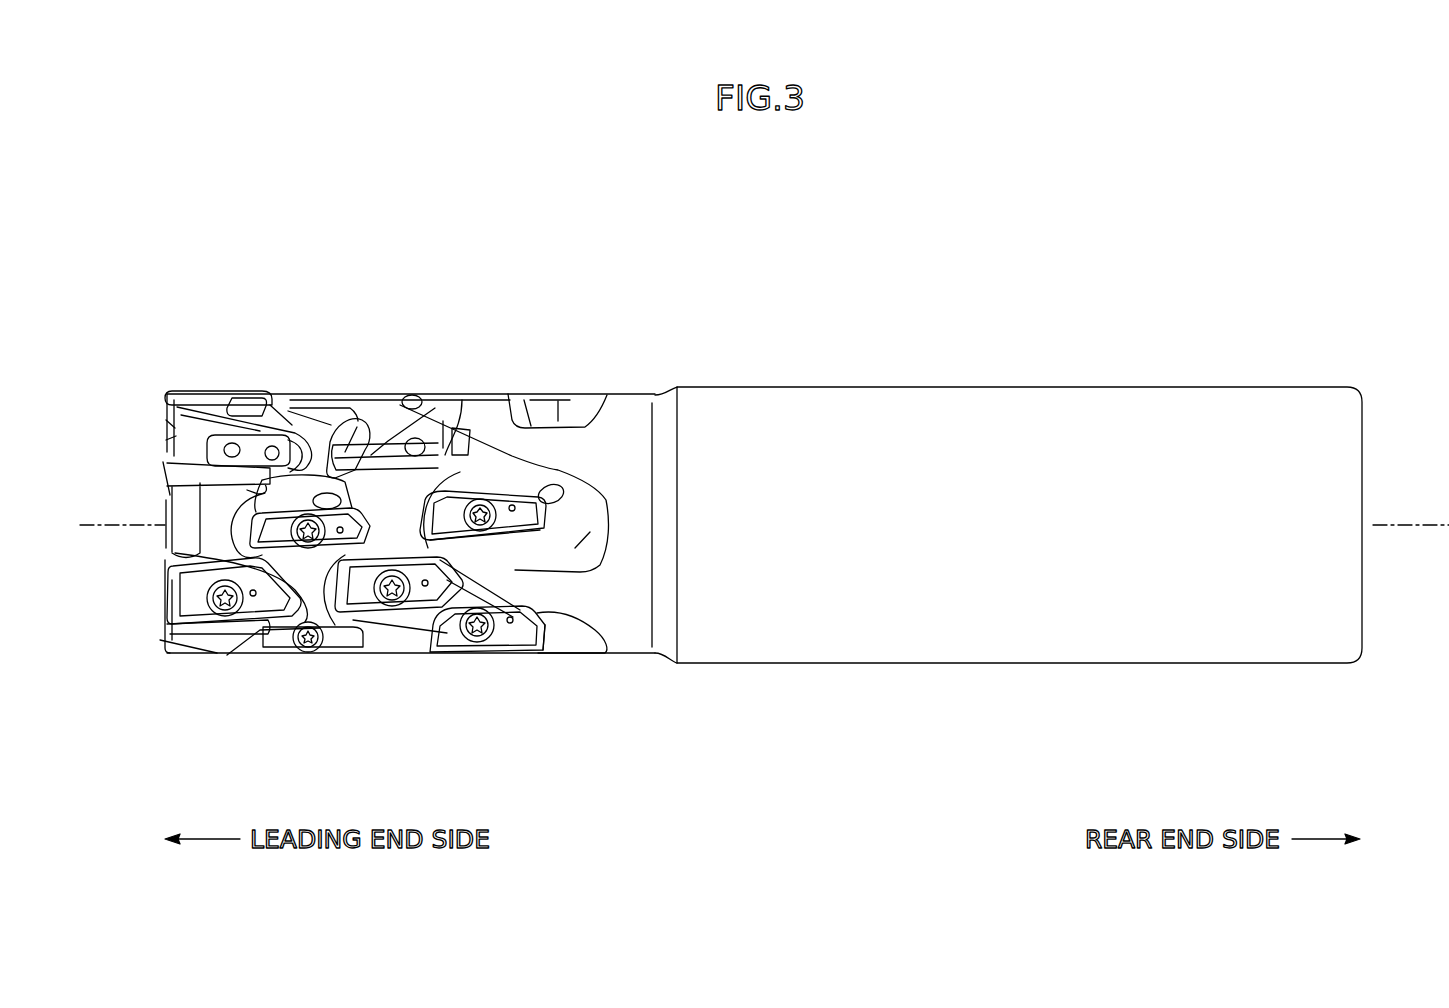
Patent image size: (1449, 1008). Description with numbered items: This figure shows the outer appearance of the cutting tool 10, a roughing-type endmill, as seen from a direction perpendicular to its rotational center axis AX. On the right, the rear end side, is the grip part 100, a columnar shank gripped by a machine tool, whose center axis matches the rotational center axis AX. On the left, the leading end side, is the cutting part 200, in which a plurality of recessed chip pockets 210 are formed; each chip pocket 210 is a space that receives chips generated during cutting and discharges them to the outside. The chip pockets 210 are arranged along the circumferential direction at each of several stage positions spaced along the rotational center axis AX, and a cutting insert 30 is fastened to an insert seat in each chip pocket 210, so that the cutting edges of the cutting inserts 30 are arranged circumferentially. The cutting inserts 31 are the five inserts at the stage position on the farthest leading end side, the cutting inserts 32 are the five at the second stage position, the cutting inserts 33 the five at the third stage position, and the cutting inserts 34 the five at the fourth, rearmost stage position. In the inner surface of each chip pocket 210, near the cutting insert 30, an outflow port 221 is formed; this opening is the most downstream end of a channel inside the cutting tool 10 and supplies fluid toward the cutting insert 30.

The cutting tool 10 is at (1250, 240).
The grip part 100 is at (998, 368).
The cutting part 200 is at (333, 383).
The chip pocket 210 is at (296, 492).
The outflow port 221 is at (228, 440).
The cutting insert 30 is at (362, 521).
The cutting inserts at first stage position 31 is at (196, 465).
The cutting inserts at second stage position 32 is at (260, 640).
The cutting inserts at third stage position 33 is at (388, 500).
The cutting inserts at fourth stage position 34 is at (468, 422).
The rotational center axis AX is at (102, 521).